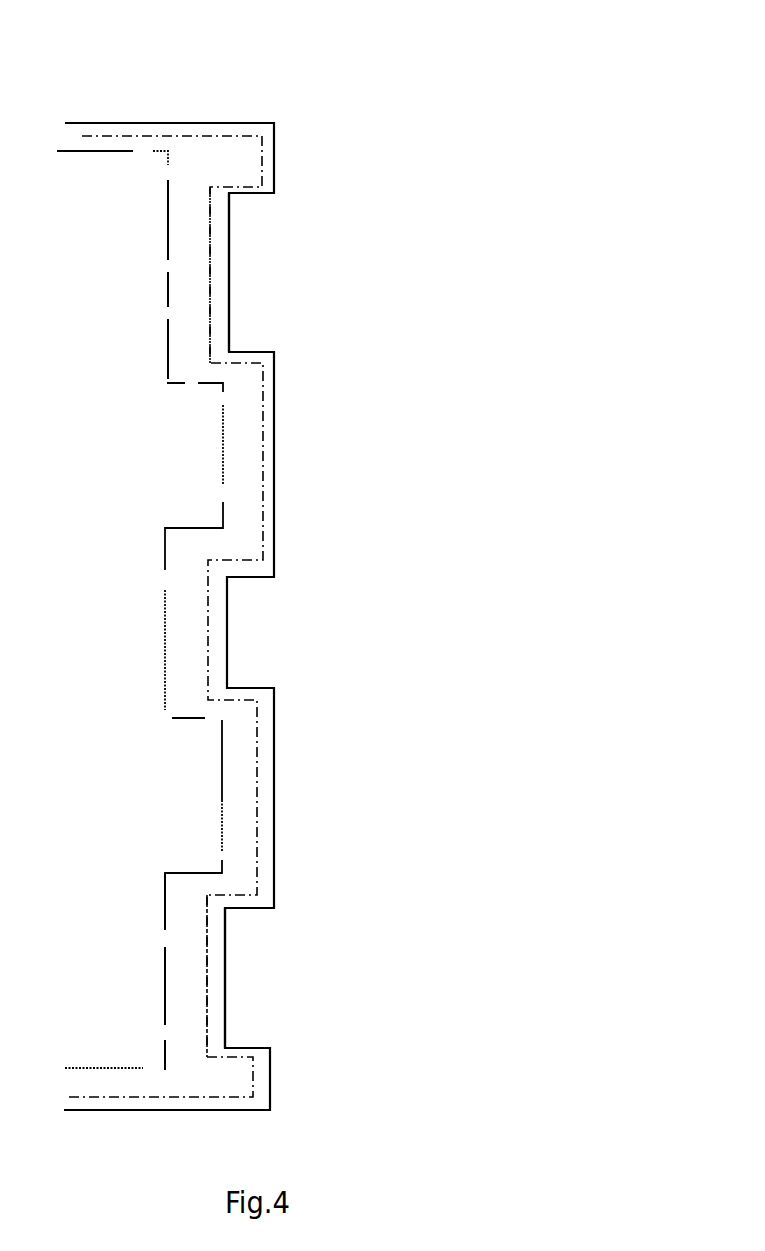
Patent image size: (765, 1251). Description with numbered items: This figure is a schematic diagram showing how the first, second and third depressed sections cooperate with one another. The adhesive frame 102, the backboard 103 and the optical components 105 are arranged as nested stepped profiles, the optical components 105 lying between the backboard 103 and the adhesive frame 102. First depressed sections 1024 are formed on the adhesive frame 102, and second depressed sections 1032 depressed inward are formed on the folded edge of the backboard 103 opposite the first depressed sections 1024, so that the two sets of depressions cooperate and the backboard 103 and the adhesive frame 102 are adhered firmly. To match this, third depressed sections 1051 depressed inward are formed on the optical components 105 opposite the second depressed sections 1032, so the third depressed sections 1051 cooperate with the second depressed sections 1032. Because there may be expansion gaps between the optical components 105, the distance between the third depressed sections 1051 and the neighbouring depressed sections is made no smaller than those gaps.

The adhesive frame 102 is at (275, 124).
The backboard 103 is at (198, 137).
The optical components 105 is at (85, 151).
The first depressed section 1024 is at (230, 215).
The second depressed section 1032 is at (210, 262).
The third depressed section 1051 is at (168, 327).